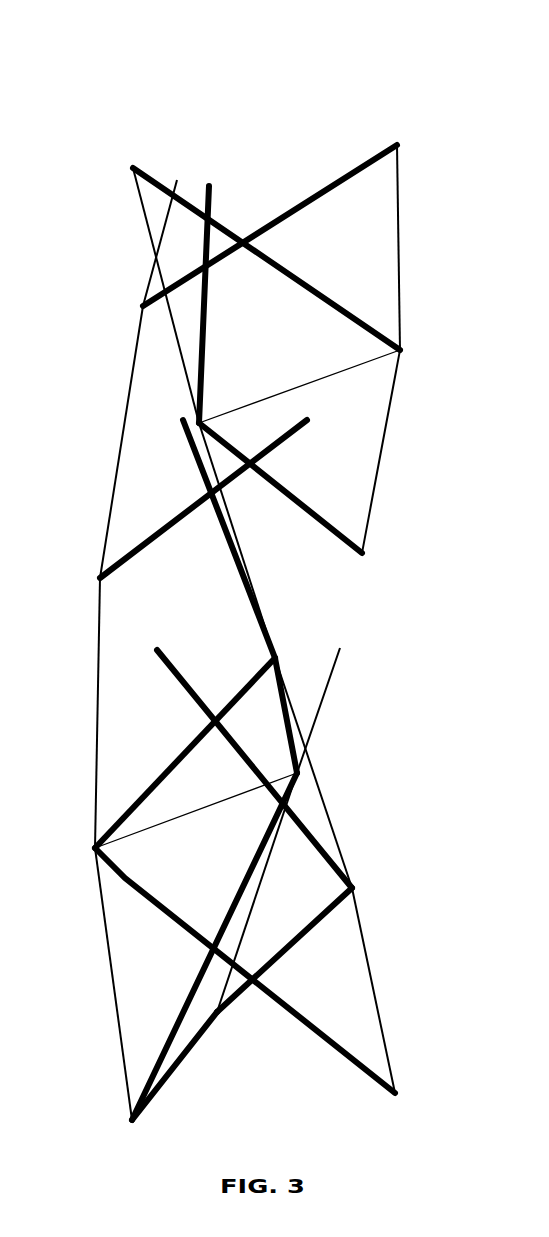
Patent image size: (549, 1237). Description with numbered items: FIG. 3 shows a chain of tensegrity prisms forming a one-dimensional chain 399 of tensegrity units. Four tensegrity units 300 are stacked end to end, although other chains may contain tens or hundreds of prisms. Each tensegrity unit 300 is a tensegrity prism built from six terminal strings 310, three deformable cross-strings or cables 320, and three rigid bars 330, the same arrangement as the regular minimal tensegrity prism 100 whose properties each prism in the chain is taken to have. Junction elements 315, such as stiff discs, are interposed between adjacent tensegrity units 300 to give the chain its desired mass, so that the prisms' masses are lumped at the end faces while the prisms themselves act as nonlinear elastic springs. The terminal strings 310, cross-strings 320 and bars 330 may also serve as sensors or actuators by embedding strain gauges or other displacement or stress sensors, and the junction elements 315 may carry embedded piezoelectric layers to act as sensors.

The one-dimensional chain of tensegrity units 399 is at (267, 34).
The tensegrity unit 300 is at (424, 247).
The regular minimal tensegrity prism 100 is at (418, 495).
The terminal strings 310 is at (138, 308).
The junction elements 315 is at (114, 104).
The deformable cross-strings 320 is at (140, 206).
The rigid bars 330 is at (320, 198).